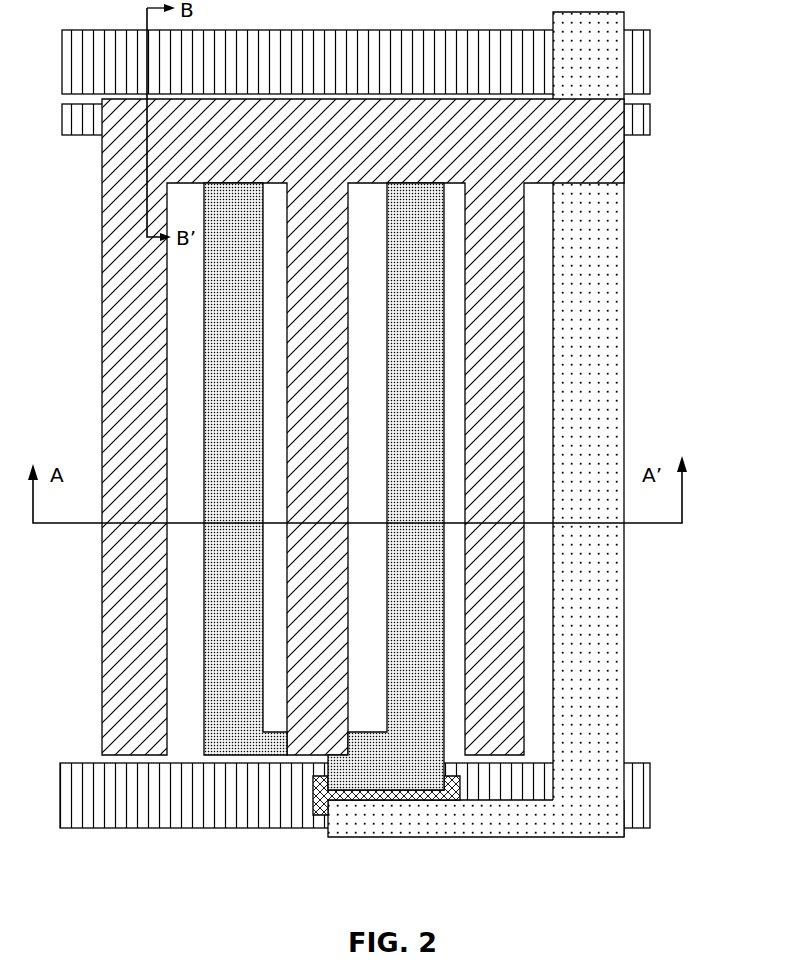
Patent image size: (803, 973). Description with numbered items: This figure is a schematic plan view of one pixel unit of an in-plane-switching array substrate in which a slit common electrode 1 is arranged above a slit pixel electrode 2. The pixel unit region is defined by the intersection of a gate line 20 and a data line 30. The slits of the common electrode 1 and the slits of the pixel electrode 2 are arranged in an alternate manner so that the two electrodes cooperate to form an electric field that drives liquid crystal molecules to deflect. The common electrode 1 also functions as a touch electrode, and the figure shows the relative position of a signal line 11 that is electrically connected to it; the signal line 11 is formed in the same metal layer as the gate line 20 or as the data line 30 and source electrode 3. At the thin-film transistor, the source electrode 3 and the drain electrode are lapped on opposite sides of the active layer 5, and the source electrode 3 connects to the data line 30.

The gate line 20 is at (632, 62).
The signal line 11 is at (634, 120).
The common electrode 1 is at (600, 155).
The data line 30 is at (600, 245).
The pixel electrode 2 is at (418, 353).
The active layer 5 is at (323, 822).
The source electrode 3 is at (401, 815).